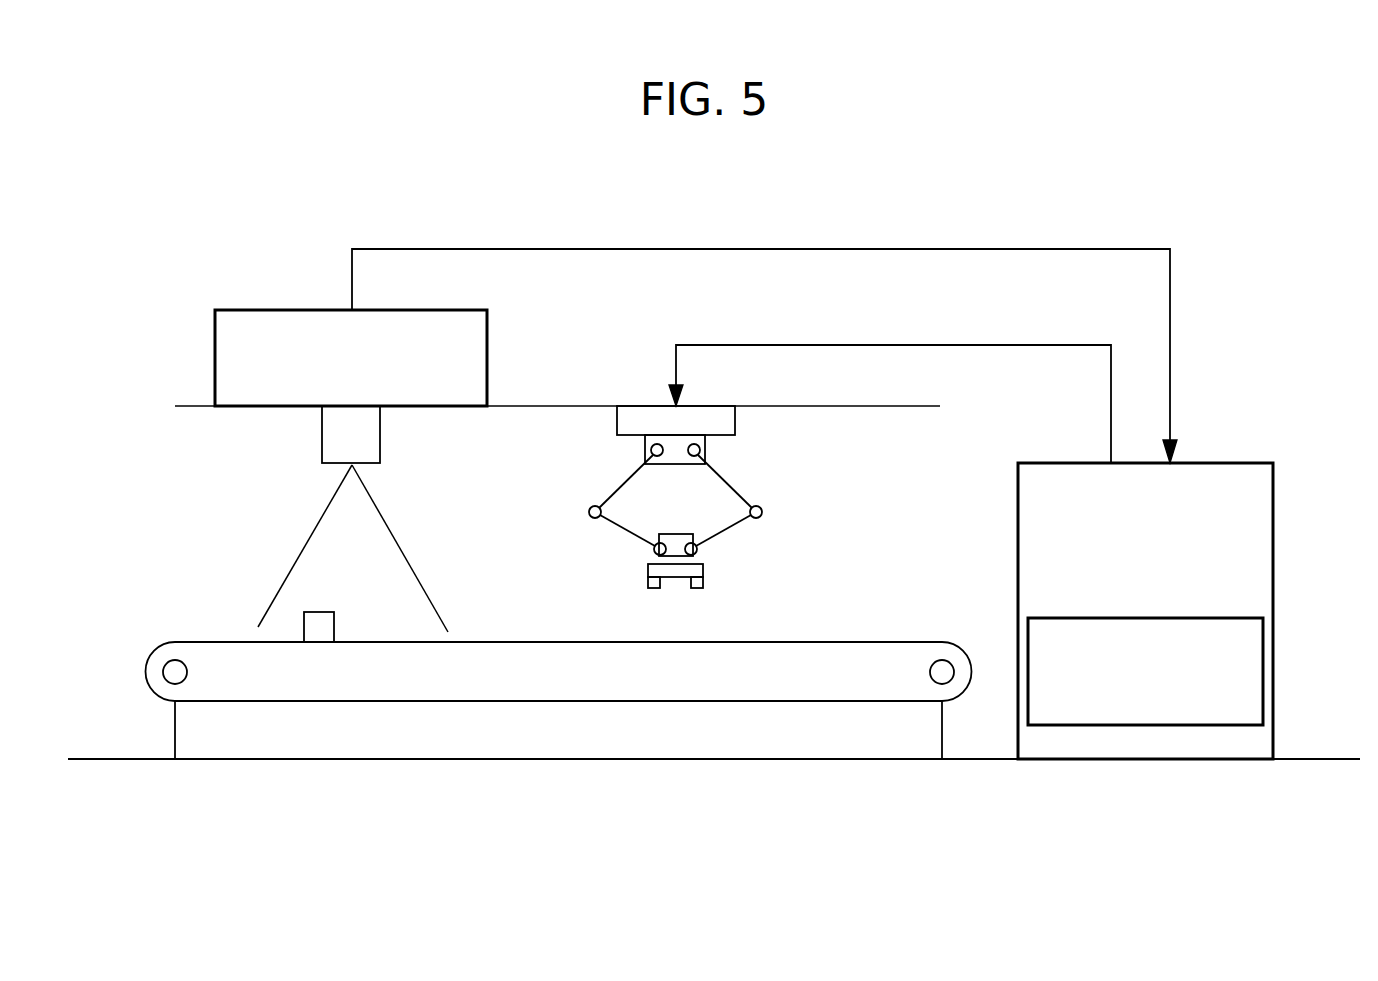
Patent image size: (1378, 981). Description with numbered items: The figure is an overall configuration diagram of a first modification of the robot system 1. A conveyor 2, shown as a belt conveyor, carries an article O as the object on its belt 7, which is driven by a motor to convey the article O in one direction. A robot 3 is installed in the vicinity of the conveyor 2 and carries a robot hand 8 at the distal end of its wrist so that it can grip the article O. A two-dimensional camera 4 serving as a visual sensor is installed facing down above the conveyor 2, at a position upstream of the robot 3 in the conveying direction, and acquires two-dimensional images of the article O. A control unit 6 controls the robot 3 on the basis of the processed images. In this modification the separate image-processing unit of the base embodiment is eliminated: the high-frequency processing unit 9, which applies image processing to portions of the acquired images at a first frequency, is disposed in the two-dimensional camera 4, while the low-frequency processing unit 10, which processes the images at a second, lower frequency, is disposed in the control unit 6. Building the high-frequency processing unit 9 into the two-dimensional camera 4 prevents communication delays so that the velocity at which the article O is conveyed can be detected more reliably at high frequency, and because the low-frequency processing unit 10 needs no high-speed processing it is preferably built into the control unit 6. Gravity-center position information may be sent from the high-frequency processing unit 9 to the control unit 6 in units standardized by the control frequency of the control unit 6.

The robot system 1 is at (184, 205).
The conveyor 2 is at (549, 649).
The robot 3 is at (718, 505).
The two-dimensional camera 4 is at (322, 435).
The control unit 6 is at (1194, 611).
The belt 7 is at (903, 641).
The robot hand 8 is at (695, 588).
The high-frequency processing unit 9 is at (297, 310).
The low-frequency processing unit 10 is at (1228, 618).
The article O is at (314, 612).